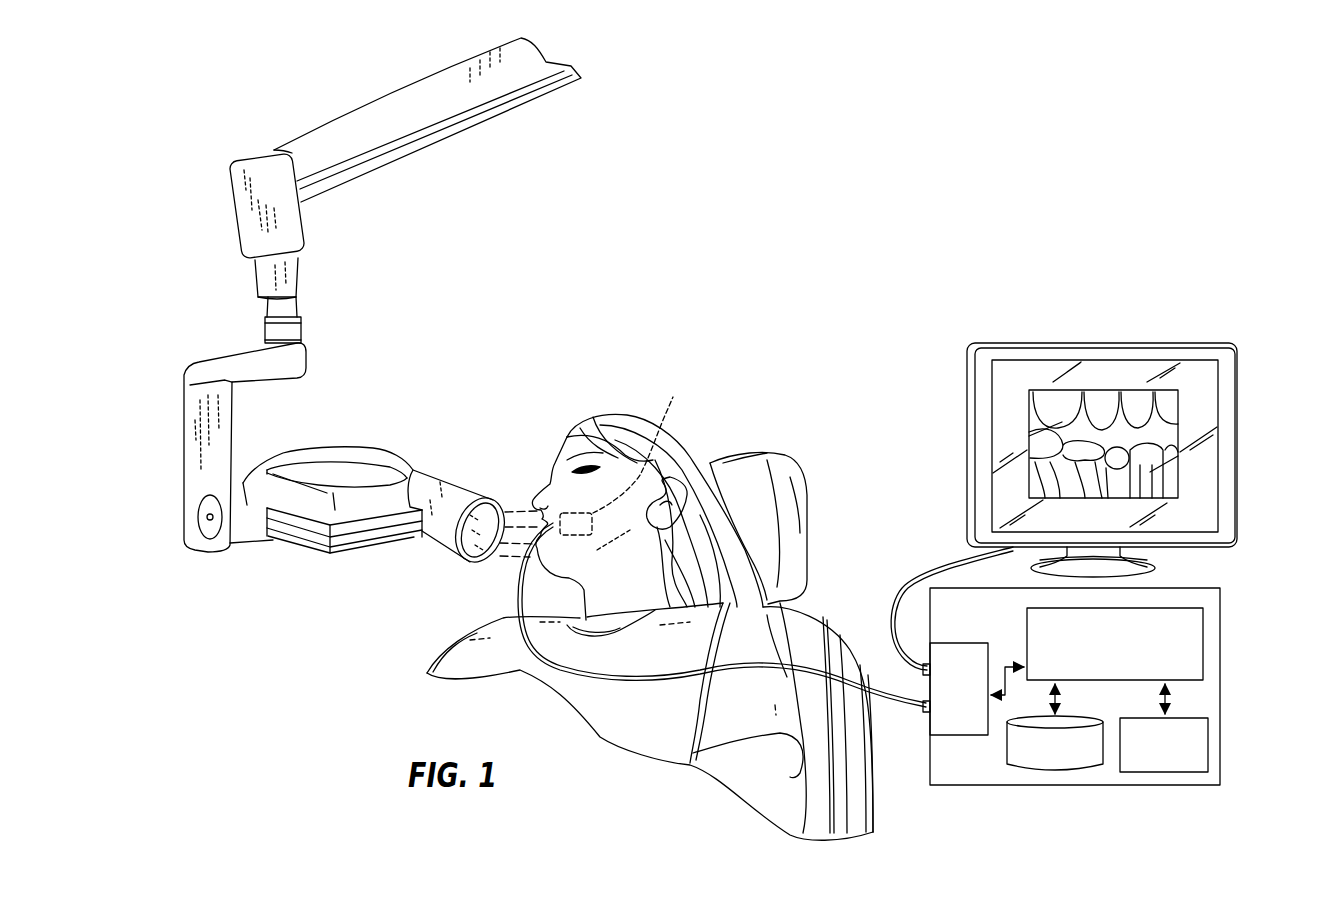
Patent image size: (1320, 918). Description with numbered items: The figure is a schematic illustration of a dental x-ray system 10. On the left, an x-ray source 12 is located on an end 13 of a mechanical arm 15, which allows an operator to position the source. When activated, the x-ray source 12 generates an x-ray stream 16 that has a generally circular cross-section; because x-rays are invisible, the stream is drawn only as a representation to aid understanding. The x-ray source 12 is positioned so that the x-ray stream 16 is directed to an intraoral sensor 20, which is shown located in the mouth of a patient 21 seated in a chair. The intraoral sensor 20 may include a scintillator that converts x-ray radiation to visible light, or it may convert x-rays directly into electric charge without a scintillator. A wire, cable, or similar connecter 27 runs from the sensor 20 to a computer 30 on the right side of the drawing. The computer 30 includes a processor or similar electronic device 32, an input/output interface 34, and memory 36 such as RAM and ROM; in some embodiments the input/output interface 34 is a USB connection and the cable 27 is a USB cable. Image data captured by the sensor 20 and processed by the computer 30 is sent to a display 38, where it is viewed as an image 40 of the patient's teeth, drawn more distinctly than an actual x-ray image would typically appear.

The dental x-ray system 10 is at (806, 198).
The x-ray source 12 is at (394, 441).
The end 13 is at (230, 552).
The mechanical arm 15 is at (427, 150).
The x-ray stream 16 is at (499, 565).
The intraoral sensor 20 is at (623, 452).
The patient 21 is at (616, 394).
The connecter 27 is at (640, 684).
The computer 30 is at (1116, 719).
The processor 32 is at (1205, 625).
The input/output interface 34 is at (958, 737).
The memory 36 is at (1072, 770).
The display 38 is at (1133, 342).
The image 40 is at (1186, 412).